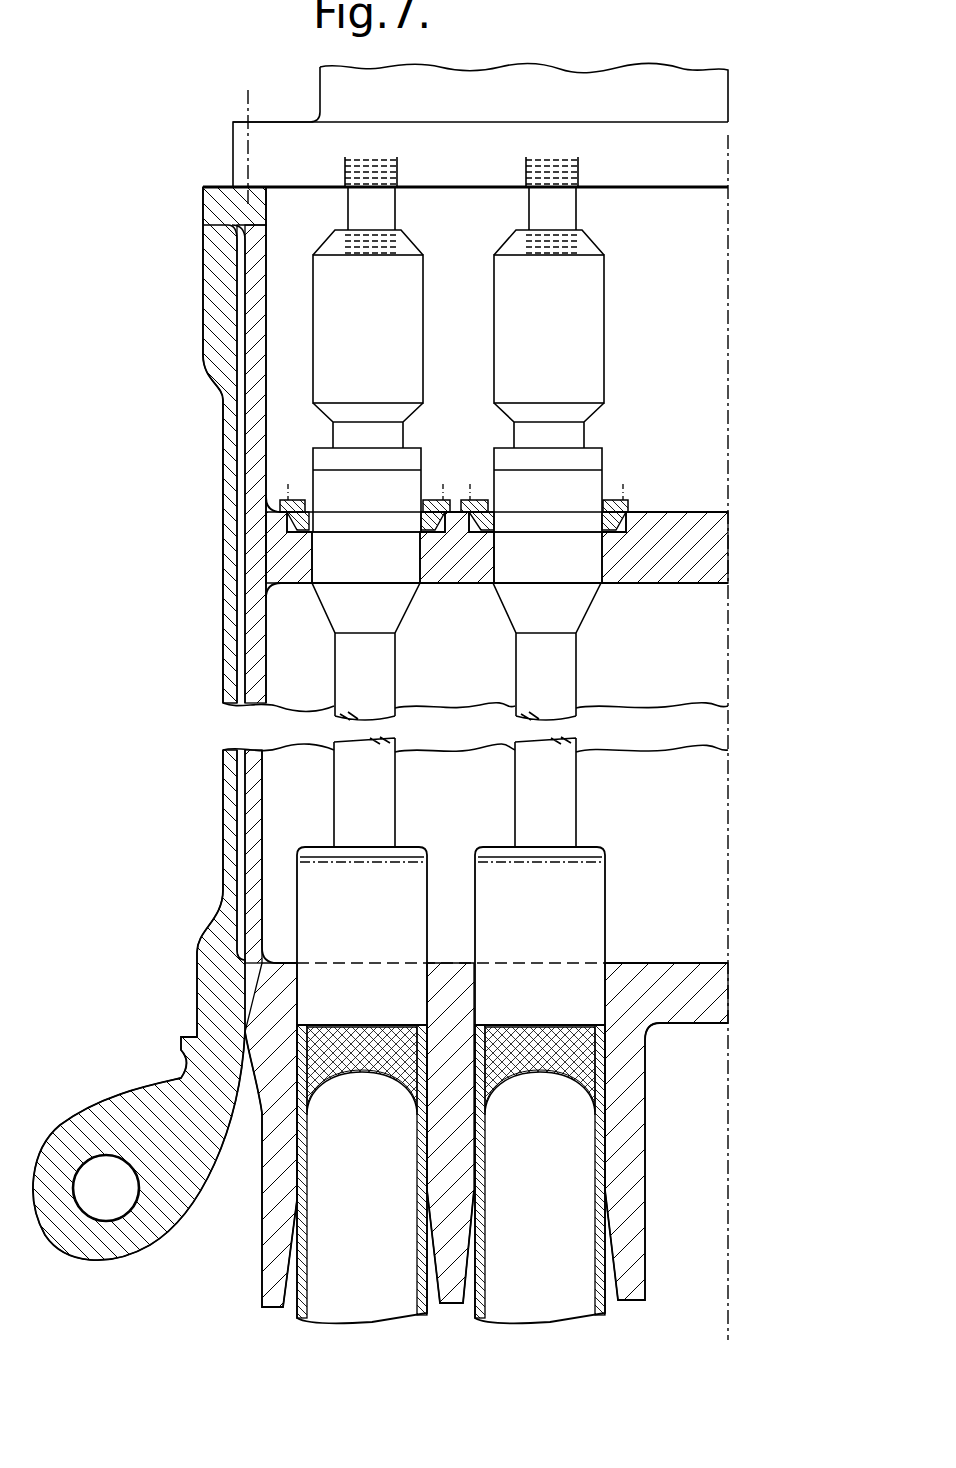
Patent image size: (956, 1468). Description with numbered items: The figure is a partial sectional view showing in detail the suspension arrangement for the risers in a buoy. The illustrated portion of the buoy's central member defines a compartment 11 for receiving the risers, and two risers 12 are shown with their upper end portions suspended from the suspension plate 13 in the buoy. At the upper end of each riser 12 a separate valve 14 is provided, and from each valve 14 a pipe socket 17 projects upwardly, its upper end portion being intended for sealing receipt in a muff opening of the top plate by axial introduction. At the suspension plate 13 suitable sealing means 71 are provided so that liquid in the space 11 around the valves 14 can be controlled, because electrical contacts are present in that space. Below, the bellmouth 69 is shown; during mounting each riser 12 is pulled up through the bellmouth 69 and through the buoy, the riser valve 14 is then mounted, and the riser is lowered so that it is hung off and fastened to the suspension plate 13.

The compartment 11 is at (678, 301).
The riser 12 is at (500, 870).
The suspension plate 13 is at (697, 548).
The valve 14 is at (391, 355).
The pipe socket 17 is at (373, 210).
The bellmouth 69 is at (628, 1230).
The sealing means 71 is at (590, 497).